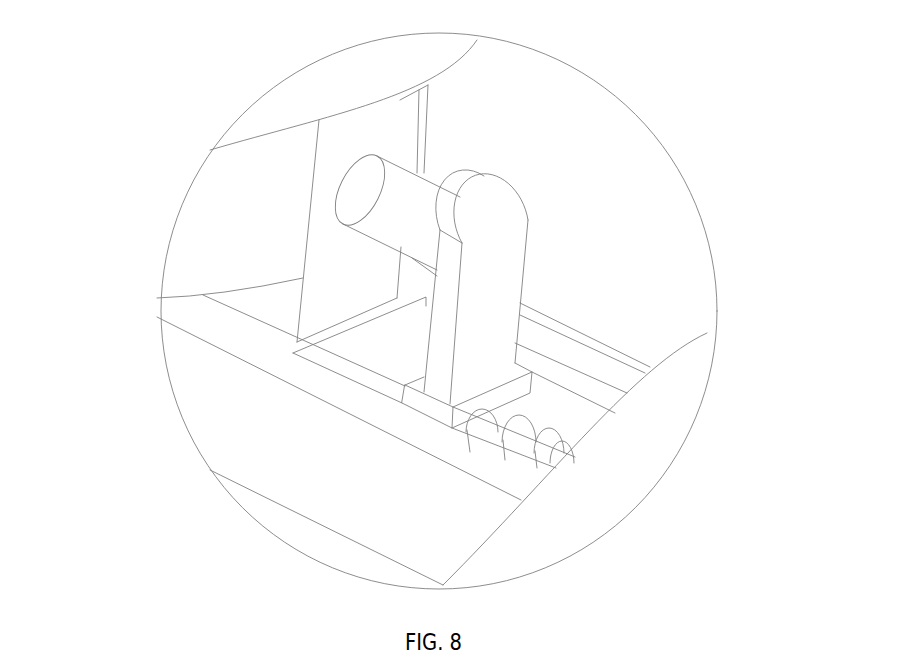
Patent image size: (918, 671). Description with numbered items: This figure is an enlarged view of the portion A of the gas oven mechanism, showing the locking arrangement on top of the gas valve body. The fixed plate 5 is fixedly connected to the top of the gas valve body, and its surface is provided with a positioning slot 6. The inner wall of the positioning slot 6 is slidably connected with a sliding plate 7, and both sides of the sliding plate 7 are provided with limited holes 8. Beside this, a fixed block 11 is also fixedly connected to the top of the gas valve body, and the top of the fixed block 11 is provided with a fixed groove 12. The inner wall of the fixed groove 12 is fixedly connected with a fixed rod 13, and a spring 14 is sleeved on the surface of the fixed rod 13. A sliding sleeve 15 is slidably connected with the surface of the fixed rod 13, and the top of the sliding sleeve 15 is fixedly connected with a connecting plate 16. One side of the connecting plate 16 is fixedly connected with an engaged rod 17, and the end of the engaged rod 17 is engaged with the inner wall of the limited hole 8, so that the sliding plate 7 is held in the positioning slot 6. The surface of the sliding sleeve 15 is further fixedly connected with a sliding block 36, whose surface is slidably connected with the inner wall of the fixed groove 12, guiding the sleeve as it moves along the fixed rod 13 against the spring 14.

The fixed plate 5 is at (240, 170).
The positioning slot 6 is at (421, 122).
The sliding plate 7 is at (315, 315).
The limited hole 8 is at (308, 232).
The fixed block 11 is at (555, 322).
The fixed groove 12 is at (587, 423).
The fixed rod 13 is at (417, 364).
The spring 14 is at (557, 460).
The sliding sleeve 15 is at (533, 397).
The connecting plate 16 is at (477, 268).
The engaged rod 17 is at (403, 215).
The sliding block 36 is at (542, 392).
The portion A is at (620, 513).